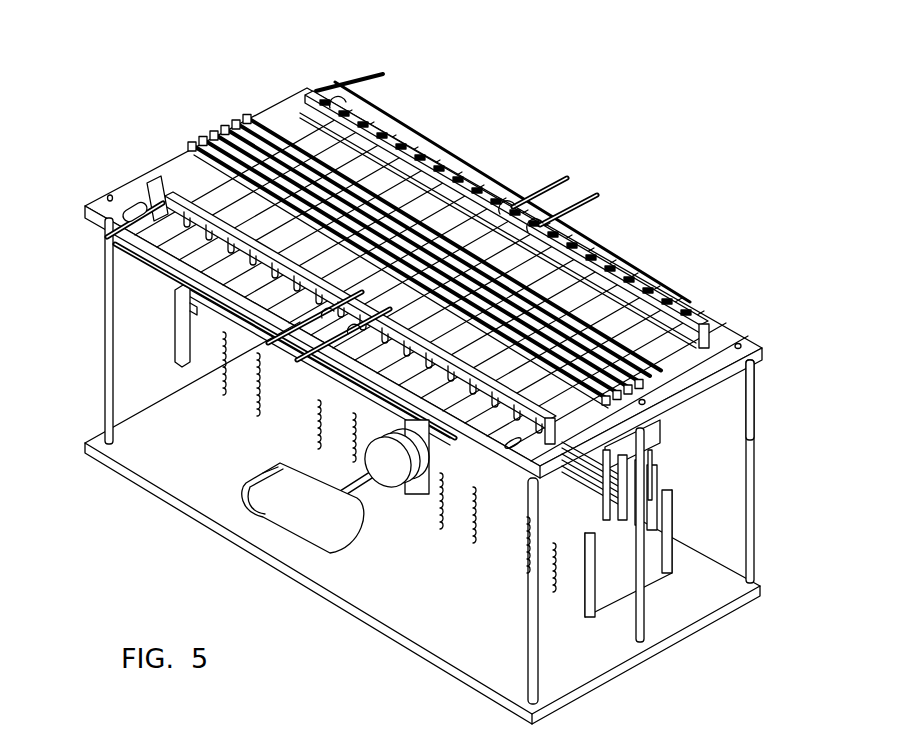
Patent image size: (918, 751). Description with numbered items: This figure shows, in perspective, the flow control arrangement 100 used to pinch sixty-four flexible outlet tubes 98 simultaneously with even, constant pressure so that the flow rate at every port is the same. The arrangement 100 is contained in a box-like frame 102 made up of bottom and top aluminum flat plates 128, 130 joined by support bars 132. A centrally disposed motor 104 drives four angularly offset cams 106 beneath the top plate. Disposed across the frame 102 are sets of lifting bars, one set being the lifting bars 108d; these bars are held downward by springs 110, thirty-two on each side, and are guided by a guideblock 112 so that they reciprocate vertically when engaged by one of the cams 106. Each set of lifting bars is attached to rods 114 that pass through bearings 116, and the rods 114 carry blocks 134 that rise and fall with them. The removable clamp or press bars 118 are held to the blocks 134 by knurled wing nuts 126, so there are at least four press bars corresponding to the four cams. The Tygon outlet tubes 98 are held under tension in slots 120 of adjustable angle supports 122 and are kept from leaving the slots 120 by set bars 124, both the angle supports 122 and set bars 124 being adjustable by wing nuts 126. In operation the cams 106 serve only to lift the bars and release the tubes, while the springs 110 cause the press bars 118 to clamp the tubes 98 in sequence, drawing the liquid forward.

The outlet tubes 98 is at (566, 178).
The arrangement 100 is at (718, 398).
The box-like frame 102 is at (755, 432).
The motor 104 is at (347, 552).
The cams 106 is at (415, 496).
The lifting bars 108d is at (645, 475).
The springs 110 is at (482, 527).
The guideblock 112 is at (664, 545).
The rods 114 is at (655, 468).
The bearings 116 is at (660, 428).
The clamp or press bars 118 is at (222, 118).
The slots 120 is at (440, 170).
The adjustable angle supports 122 is at (132, 180).
The set bars 124 is at (593, 240).
The wing nuts 126 is at (100, 218).
The bottom aluminum flat plate 128 is at (620, 650).
The top aluminum flat plate 130 is at (750, 348).
The support bars 132 is at (755, 520).
The blocks 134 is at (190, 164).